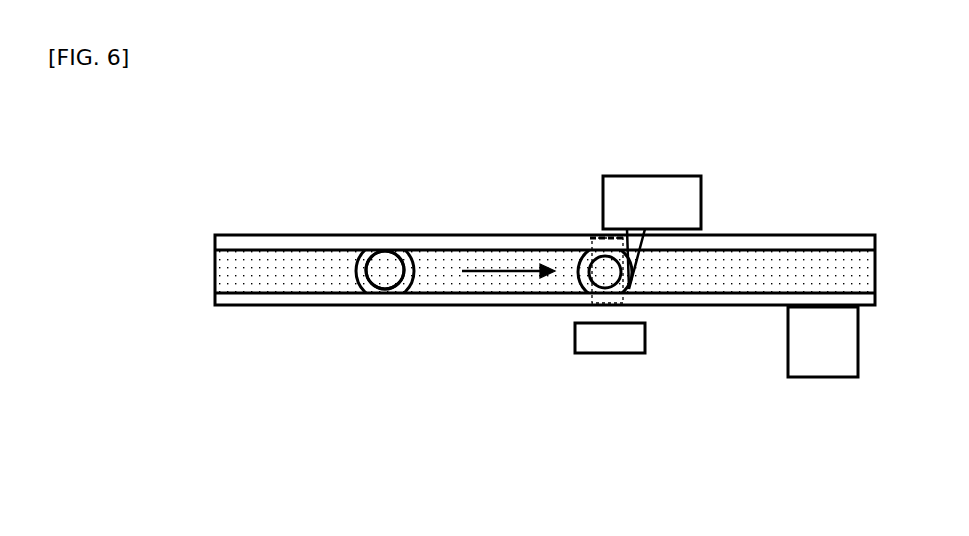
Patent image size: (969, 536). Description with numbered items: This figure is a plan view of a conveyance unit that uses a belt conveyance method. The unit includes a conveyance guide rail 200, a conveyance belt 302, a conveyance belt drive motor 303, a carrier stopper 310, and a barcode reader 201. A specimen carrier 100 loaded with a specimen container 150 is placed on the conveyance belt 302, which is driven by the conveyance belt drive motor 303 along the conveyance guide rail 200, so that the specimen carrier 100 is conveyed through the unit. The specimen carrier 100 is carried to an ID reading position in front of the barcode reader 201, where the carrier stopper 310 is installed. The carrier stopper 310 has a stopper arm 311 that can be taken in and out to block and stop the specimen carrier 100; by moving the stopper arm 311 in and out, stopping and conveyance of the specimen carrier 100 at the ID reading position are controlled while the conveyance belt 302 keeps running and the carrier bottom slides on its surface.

The conveyance guide rail 200 is at (268, 235).
The conveyance belt 302 is at (818, 262).
The specimen carrier 100 is at (340, 235).
The specimen container 150 is at (384, 268).
The carrier stopper 310 is at (662, 188).
The stopper arm 311 is at (638, 257).
The barcode reader 201 is at (610, 353).
The conveyance belt drive motor 303 is at (823, 377).